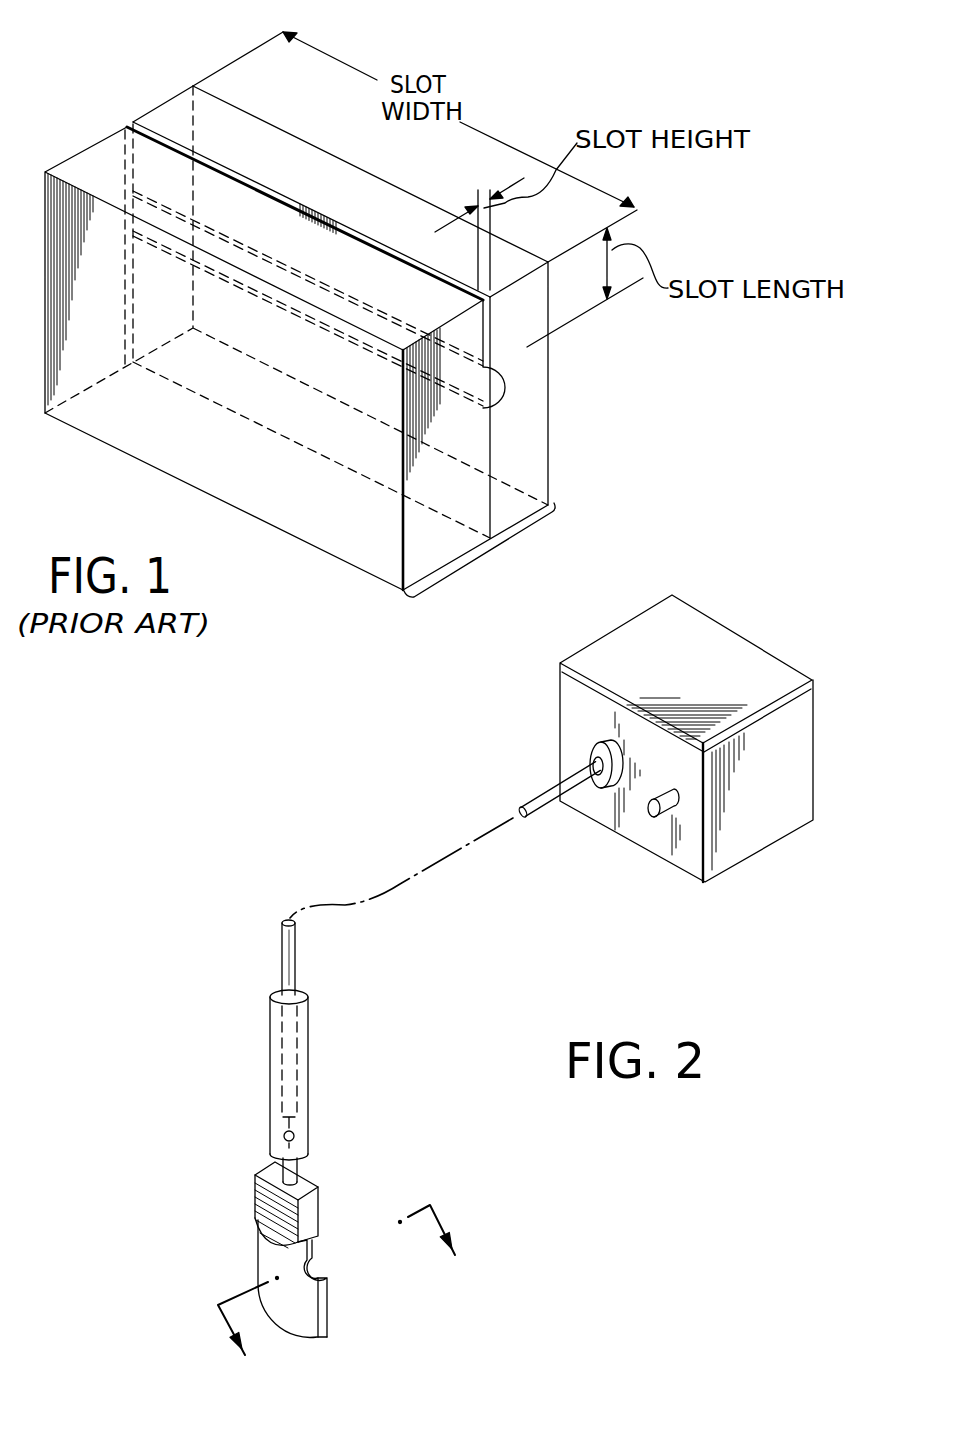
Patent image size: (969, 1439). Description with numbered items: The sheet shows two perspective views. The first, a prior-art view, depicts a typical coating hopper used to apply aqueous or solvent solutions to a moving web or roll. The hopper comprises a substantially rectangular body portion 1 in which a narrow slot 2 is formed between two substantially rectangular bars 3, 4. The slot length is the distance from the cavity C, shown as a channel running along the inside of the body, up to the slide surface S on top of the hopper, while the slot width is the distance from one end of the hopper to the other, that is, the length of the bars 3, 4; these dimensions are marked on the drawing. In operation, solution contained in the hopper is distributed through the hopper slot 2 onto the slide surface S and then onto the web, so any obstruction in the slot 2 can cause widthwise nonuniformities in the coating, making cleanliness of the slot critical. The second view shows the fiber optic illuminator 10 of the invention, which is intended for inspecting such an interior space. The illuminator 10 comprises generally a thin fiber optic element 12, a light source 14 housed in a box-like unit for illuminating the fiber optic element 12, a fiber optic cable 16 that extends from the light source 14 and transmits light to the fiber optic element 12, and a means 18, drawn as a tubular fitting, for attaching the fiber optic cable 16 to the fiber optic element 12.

In FIG. 1, the slide surface S is at (87, 170).
In FIG. 1, the body portion 1 is at (490, 563).
In FIG. 1, the slot 2 is at (271, 197).
In FIG. 1, the rectangular bar 3 is at (541, 467).
In FIG. 1, the rectangular bar 4 is at (410, 543).
In FIG. 2, the rectangular bar 4 is at (329, 1285).
In FIG. 1, the cavity C is at (505, 393).
In FIG. 2, the fiber optic illuminator 10 is at (826, 617).
In FIG. 2, the fiber optic element 12 is at (313, 1258).
In FIG. 2, the light source 14 is at (686, 862).
In FIG. 2, the fiber optic cable 16 is at (282, 938).
In FIG. 2, the means for attaching 18 is at (302, 1040).